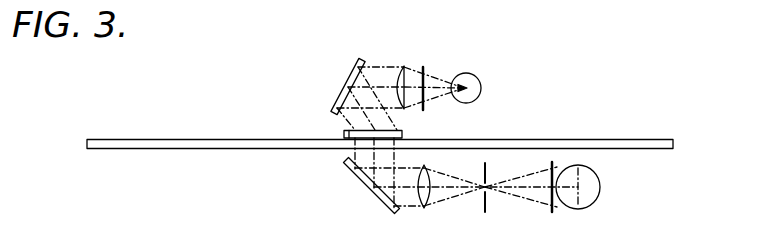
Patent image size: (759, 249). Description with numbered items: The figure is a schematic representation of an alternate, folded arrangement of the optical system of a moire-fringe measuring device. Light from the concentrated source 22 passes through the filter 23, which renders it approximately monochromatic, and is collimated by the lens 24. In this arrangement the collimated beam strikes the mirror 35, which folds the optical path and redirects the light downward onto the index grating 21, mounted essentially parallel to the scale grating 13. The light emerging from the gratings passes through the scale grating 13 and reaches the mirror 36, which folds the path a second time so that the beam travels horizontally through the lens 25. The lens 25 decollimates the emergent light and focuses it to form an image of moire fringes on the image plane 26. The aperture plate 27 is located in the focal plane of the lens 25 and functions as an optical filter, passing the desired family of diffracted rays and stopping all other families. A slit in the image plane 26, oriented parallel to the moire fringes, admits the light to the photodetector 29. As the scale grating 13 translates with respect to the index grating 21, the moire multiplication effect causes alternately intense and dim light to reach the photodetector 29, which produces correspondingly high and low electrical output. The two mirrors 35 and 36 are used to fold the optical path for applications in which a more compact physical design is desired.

The scale grating 13 is at (213, 149).
The index grating 21 is at (344, 134).
The concentrated source 22 is at (472, 73).
The filter 23 is at (425, 65).
The lens 24 is at (404, 65).
The lens 25 is at (425, 208).
The image plane 26 is at (553, 210).
The aperture plate 27 is at (482, 210).
The photodetector 29 is at (600, 187).
The mirror 35 is at (352, 67).
The mirror 36 is at (368, 190).